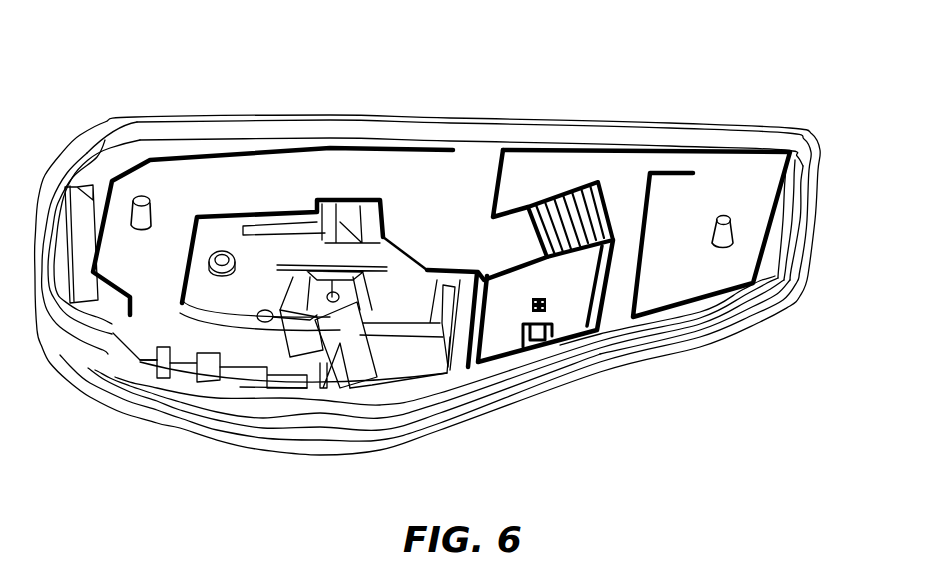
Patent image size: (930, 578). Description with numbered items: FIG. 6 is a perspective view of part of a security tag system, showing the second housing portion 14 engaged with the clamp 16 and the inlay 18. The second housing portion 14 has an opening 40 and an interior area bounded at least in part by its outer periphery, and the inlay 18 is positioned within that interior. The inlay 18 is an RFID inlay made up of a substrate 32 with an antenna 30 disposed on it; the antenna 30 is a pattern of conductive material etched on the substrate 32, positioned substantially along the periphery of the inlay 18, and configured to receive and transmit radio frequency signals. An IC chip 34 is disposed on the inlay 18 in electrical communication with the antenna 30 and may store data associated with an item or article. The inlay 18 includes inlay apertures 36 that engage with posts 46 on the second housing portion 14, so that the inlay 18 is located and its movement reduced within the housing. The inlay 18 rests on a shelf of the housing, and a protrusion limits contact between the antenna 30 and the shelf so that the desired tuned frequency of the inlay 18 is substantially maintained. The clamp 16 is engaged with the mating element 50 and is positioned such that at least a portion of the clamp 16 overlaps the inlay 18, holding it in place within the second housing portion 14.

The second housing portion 14 is at (721, 60).
The clamp 16 is at (276, 301).
The inlay 18 is at (228, 166).
The antenna 30 is at (262, 150).
The substrate 32 is at (424, 193).
The IC chip 34 is at (529, 322).
The inlay aperture 36 is at (153, 217).
The opening 40 is at (329, 130).
The post 46 is at (145, 204).
The mating element 50 is at (208, 263).